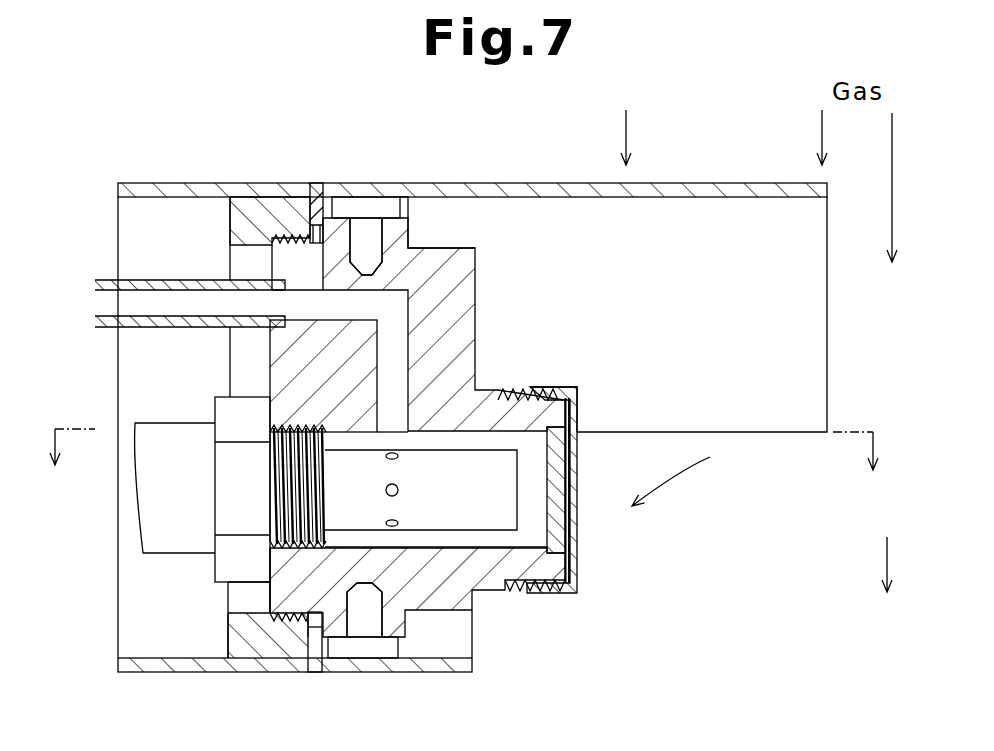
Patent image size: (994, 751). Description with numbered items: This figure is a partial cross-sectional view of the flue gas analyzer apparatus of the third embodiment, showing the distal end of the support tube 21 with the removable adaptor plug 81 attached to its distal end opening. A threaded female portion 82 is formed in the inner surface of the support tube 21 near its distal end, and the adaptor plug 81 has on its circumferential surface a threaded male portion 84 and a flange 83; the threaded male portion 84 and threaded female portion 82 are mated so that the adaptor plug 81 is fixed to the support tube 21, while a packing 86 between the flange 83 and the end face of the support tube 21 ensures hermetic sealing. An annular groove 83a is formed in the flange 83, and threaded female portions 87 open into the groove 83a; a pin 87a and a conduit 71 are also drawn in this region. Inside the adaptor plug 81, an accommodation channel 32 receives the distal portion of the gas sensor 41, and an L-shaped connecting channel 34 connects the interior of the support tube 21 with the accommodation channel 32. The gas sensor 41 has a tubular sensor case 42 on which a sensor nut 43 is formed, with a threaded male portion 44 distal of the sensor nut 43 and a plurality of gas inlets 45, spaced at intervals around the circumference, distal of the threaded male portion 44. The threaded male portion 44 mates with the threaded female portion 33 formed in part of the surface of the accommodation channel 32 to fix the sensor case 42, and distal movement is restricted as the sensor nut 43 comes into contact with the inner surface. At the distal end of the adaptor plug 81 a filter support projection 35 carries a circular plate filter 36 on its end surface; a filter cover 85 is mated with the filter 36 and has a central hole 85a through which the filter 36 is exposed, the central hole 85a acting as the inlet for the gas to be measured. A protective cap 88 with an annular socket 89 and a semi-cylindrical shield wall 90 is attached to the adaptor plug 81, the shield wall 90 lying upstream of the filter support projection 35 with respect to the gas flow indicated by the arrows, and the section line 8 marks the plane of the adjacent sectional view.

The section line 8- 8 is at (463, 465).
The support tube 21 is at (146, 183).
The accommodation channel 32 is at (423, 438).
The threaded female portion 33 is at (312, 425).
The connecting channel 34 is at (325, 313).
The filter support projection 35 is at (493, 395).
The filter 36 is at (555, 538).
The gas sensor 41 is at (150, 412).
The sensor case 42 is at (173, 550).
The sensor nut 43 is at (246, 405).
The threaded male portion 44 is at (307, 555).
The gas inlets 45 is at (398, 491).
The pipe 71 is at (96, 283).
The adaptor plug 81 is at (467, 275).
The threaded female portion 82 is at (296, 238).
The flange 83 is at (402, 240).
The annular groove 83a is at (390, 217).
The threaded male portion 84 is at (274, 236).
The filter cover 85 is at (575, 570).
The central hole 85a is at (578, 433).
The packing 86 is at (317, 185).
The threaded female portions 87 is at (358, 218).
The pin 87a is at (327, 670).
The protective cap 88 is at (671, 172).
The socket 89 is at (443, 672).
The shield wall 90 is at (772, 192).